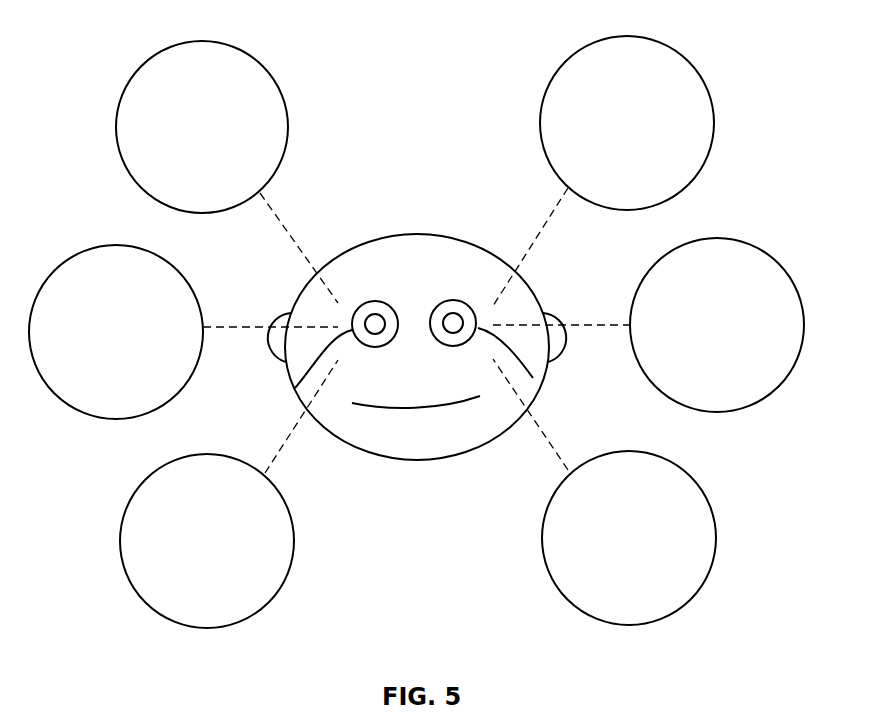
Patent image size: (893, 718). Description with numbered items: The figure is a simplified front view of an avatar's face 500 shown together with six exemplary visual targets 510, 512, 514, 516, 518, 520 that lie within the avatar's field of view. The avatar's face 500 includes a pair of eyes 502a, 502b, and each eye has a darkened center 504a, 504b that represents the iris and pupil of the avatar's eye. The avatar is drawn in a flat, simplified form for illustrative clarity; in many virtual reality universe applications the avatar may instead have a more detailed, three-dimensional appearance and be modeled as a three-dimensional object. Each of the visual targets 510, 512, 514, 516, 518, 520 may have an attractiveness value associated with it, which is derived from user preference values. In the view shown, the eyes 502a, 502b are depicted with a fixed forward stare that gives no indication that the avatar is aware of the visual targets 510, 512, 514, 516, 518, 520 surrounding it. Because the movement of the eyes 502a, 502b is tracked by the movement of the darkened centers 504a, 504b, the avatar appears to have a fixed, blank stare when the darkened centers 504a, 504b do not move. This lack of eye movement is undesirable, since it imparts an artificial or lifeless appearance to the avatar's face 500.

The avatar's face 500 is at (417, 461).
The eye 502a is at (295, 388).
The eye 502b is at (533, 378).
The darkened center 504a is at (375, 314).
The darkened center 504b is at (453, 313).
The visual target 510 is at (200, 42).
The visual target 512 is at (627, 37).
The visual target 514 is at (113, 245).
The visual target 516 is at (717, 238).
The visual target 518 is at (208, 628).
The visual target 520 is at (630, 625).